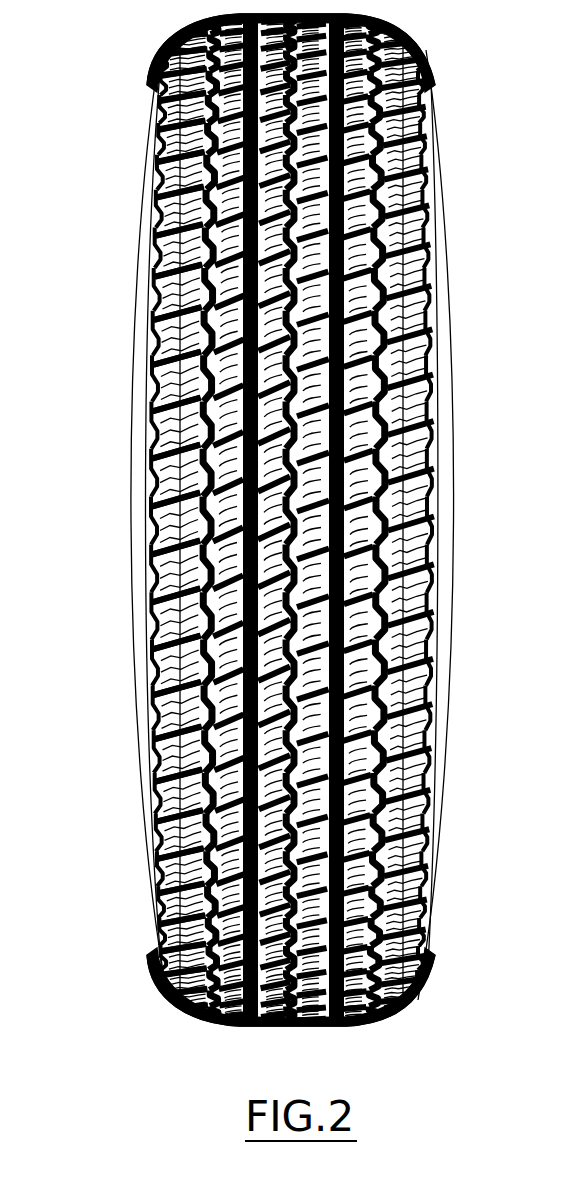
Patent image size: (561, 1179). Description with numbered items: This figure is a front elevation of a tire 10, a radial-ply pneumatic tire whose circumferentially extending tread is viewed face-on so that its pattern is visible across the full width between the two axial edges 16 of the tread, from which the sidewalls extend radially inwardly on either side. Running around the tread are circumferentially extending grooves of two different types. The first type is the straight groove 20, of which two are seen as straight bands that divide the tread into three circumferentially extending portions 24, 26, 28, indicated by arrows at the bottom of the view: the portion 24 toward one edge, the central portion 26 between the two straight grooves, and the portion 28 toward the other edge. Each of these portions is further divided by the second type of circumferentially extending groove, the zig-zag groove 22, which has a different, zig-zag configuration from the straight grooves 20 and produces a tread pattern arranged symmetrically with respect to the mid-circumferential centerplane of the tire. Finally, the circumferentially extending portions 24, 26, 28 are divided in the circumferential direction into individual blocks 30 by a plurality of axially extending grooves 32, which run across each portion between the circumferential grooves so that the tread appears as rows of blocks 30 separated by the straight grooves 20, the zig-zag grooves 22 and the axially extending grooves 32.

The tire 10 is at (482, 52).
The axial edge 16 is at (433, 286).
The straight groove 20 is at (264, 1025).
The zig-zag groove 22 is at (350, 538).
The circumferentially extending portion 24 is at (210, 1028).
The circumferentially extending portion 26 is at (302, 1035).
The circumferentially extending portion 28 is at (385, 1028).
The block 30 is at (150, 482).
The axially extending groove 32 is at (380, 371).